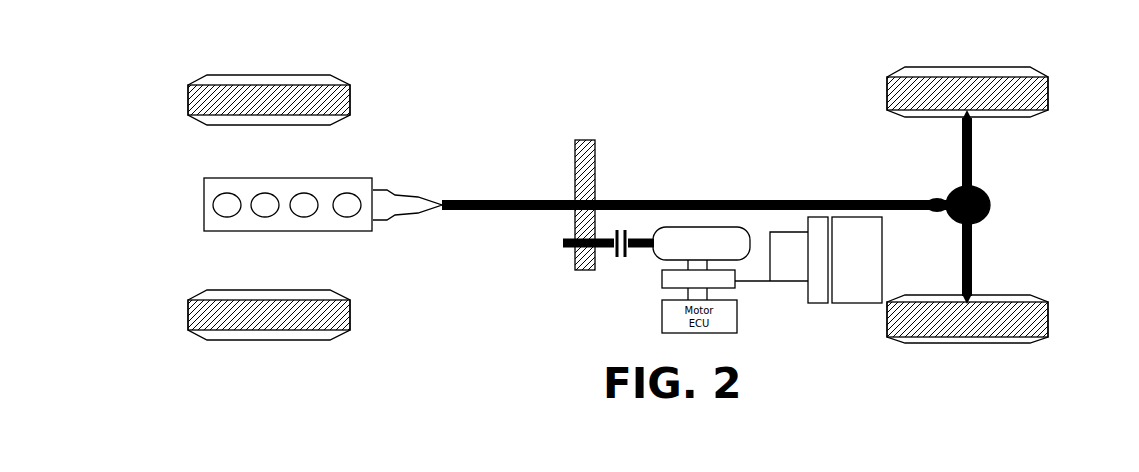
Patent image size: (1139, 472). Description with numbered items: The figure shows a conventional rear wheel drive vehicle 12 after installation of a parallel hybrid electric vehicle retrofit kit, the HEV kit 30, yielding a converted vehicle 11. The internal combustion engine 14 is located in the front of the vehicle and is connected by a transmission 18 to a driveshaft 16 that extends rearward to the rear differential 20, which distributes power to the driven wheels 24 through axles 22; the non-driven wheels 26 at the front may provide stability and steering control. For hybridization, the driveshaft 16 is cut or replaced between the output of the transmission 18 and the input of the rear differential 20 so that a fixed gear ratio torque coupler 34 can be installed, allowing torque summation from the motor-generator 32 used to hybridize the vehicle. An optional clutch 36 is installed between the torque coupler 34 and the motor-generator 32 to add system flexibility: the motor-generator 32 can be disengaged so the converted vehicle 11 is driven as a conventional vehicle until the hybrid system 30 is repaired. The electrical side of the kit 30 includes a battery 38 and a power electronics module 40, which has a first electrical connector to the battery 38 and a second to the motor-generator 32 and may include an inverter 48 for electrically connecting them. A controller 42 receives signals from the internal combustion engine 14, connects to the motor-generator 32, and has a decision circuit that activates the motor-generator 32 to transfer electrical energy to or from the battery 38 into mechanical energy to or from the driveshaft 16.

The converted vehicle 11 is at (514, 100).
The rear wheel drive vehicle 12 is at (688, 125).
The internal combustion engine 14 is at (344, 180).
The driveshaft 16 is at (502, 198).
The transmission 18 is at (418, 194).
The rear differential 20 is at (980, 190).
The axles 22 is at (975, 148).
The driven wheels 24 is at (1050, 105).
The non-driven wheels 26 is at (193, 107).
The HEV kit 30 is at (463, 371).
The motor-generator 32 is at (663, 228).
The torque coupler 34 is at (577, 138).
The clutch 36 is at (594, 290).
The battery 38 is at (840, 217).
The power electronics module 40 is at (812, 217).
The controller 42 is at (827, 342).
The inverter 48 is at (662, 281).